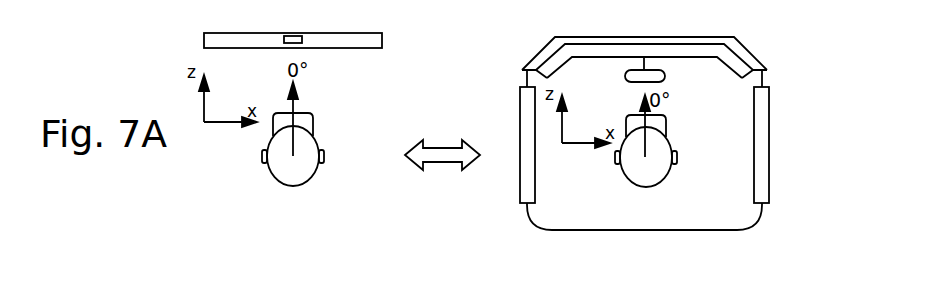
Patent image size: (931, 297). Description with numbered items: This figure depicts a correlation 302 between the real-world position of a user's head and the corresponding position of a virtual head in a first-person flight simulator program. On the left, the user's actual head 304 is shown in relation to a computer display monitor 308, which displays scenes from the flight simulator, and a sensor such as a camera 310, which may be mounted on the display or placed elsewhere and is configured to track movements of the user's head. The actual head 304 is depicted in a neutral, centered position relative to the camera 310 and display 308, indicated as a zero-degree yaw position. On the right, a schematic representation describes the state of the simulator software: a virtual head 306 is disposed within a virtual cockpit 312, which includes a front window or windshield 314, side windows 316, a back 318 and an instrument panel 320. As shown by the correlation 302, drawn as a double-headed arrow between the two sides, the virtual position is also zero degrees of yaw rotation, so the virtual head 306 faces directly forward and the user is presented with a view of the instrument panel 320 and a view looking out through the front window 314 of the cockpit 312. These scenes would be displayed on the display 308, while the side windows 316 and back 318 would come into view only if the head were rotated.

The correlation 302 is at (440, 150).
The actual head 304 is at (304, 172).
The virtual head 306 is at (656, 175).
The computer display monitor 308 is at (258, 37).
The camera 310 is at (296, 35).
The virtual cockpit 312 is at (650, 136).
The front window 314 is at (608, 39).
The side windows 316 is at (522, 108).
The back 318 is at (567, 231).
The instrument panel 320 is at (560, 46).